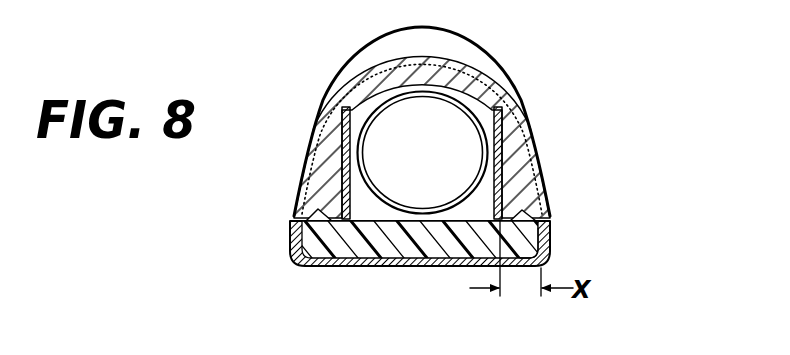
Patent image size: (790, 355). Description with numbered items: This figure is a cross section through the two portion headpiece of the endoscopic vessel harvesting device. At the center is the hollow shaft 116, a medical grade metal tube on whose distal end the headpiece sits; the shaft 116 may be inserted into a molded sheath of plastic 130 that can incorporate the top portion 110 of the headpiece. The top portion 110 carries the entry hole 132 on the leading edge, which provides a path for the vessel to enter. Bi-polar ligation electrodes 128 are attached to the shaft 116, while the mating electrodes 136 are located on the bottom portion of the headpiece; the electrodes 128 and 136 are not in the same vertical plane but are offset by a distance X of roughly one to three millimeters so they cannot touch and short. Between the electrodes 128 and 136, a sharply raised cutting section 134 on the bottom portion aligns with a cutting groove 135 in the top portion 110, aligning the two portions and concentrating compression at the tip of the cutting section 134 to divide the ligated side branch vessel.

The top portion 110 is at (475, 43).
The hollow shaft 116 is at (377, 100).
The electrodes 128 is at (343, 118).
The molded sheath of plastic 130 is at (537, 150).
The entry hole 132 is at (382, 153).
The cutting section 134 is at (524, 213).
The cutting groove 135 is at (522, 218).
The electrodes 136 is at (552, 247).